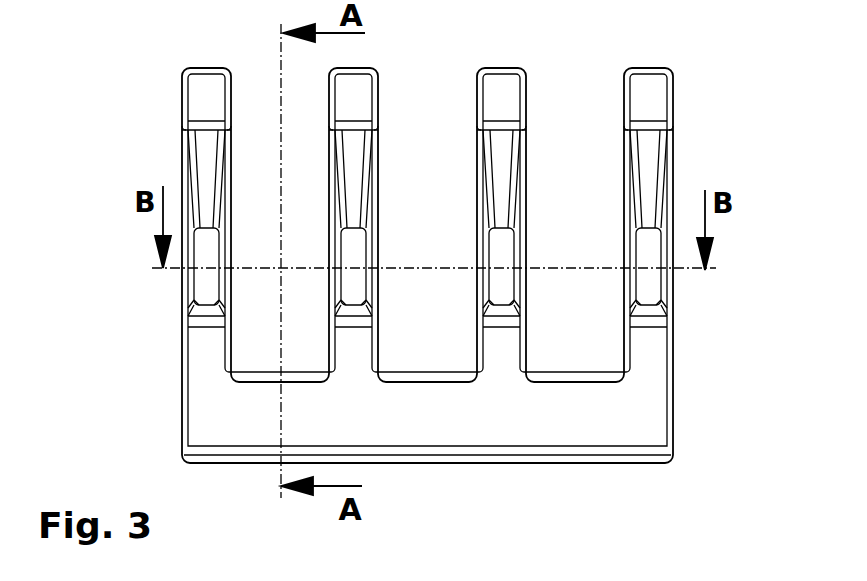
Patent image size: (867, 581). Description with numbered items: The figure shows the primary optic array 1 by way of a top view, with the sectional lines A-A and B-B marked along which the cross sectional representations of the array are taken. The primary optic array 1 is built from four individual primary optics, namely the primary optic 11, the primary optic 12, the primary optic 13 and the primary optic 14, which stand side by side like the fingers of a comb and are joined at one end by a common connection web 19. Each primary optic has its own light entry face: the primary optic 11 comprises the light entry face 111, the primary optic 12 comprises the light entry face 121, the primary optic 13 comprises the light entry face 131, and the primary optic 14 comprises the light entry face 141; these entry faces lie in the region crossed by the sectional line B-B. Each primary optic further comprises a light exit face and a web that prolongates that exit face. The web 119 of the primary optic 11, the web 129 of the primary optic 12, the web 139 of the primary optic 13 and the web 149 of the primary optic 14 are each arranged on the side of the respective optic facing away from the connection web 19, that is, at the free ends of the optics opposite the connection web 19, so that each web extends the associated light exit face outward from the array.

The primary optic array 1 is at (720, 134).
The primary optic 11 is at (206, 146).
The primary optic 12 is at (353, 150).
The primary optic 13 is at (502, 152).
The primary optic 14 is at (652, 158).
The connection web 19 is at (206, 416).
The light entry face 111 is at (206, 288).
The light entry face 121 is at (355, 243).
The light entry face 131 is at (505, 243).
The light entry face 141 is at (650, 288).
The web 119 is at (206, 94).
The web 129 is at (353, 98).
The web 139 is at (500, 98).
The web 149 is at (652, 98).